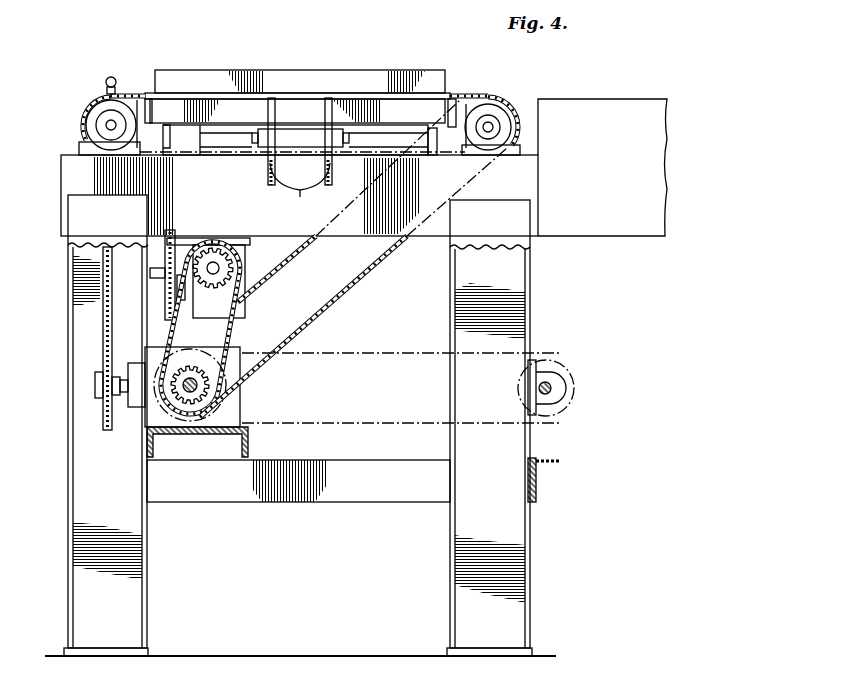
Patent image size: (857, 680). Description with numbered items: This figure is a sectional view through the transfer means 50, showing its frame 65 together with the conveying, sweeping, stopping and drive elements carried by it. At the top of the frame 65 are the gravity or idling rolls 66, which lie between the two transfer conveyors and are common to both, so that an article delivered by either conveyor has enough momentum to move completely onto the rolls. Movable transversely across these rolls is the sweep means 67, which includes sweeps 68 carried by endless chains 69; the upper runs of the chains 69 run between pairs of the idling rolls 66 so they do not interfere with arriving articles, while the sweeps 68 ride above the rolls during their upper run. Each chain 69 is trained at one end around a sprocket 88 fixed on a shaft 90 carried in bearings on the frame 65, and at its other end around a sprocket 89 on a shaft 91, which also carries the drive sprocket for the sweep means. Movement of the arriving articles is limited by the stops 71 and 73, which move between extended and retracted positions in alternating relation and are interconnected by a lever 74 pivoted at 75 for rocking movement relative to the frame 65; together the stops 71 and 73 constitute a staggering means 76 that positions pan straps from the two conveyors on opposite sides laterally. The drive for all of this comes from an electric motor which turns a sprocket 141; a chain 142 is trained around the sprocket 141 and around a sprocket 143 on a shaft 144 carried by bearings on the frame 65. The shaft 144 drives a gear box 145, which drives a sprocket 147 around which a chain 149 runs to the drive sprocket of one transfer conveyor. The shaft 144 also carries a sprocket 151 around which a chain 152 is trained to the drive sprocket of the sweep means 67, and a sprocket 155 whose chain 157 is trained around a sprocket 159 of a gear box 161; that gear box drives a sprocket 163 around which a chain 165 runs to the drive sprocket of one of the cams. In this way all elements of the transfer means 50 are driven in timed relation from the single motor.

The transfer means 50 is at (285, 125).
The frame 65 is at (70, 523).
The idling rolls 66 is at (294, 92).
The sweep means 67 is at (113, 72).
The sweeps 68 is at (106, 80).
The endless chains 69 is at (128, 93).
The stop 71 is at (412, 100).
The stop 73 is at (226, 82).
The lever 74 is at (302, 174).
The pivot 75 is at (270, 150).
The staggering means 76 is at (337, 107).
The sprocket 88 is at (95, 107).
The sprocket 89 is at (492, 105).
The shaft 90 is at (106, 125).
The shaft 91 is at (493, 124).
The sprocket 141 is at (512, 386).
The chain 142 is at (362, 352).
The sprocket 143 is at (160, 400).
The shaft 144 is at (192, 395).
The gear box 145 is at (245, 425).
The sprocket 147 is at (95, 383).
The chain 149 is at (97, 273).
The sprocket 151 is at (236, 388).
The chain 152 is at (368, 282).
The sprocket 155 is at (228, 403).
The chain 157 is at (247, 310).
The sprocket 159 is at (228, 262).
The gear box 161 is at (204, 210).
The sprocket 163 is at (177, 297).
The chain 165 is at (157, 273).